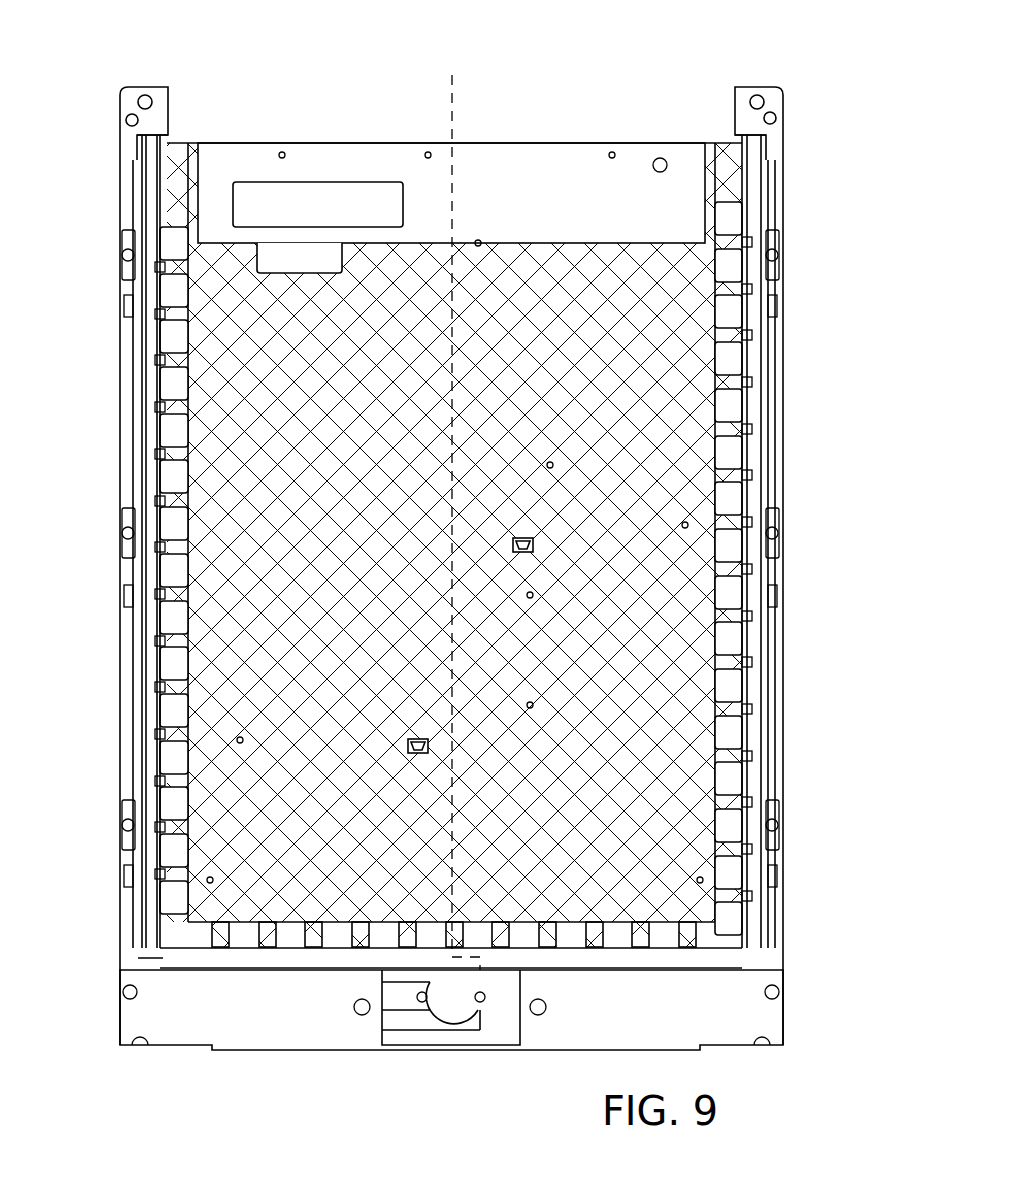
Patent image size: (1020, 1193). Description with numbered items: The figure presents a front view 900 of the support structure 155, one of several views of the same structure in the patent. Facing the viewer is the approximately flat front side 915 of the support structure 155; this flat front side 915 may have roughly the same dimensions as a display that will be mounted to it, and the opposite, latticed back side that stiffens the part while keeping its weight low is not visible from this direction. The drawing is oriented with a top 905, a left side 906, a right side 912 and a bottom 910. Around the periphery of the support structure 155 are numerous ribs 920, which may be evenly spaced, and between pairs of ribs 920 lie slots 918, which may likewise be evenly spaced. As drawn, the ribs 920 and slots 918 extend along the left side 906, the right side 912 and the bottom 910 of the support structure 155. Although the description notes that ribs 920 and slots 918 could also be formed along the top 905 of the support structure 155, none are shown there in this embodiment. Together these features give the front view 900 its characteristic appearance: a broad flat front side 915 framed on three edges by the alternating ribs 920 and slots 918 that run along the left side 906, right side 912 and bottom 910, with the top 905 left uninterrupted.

The support structure 155 is at (453, 561).
The front view 900 is at (453, 576).
The top 905 is at (455, 508).
The left side 906 is at (98, 566).
The bottom 910 is at (480, 1030).
The right side 912 is at (806, 566).
The flat front side 915 is at (340, 817).
The slots 918 is at (177, 562).
The ribs 920 is at (163, 455).